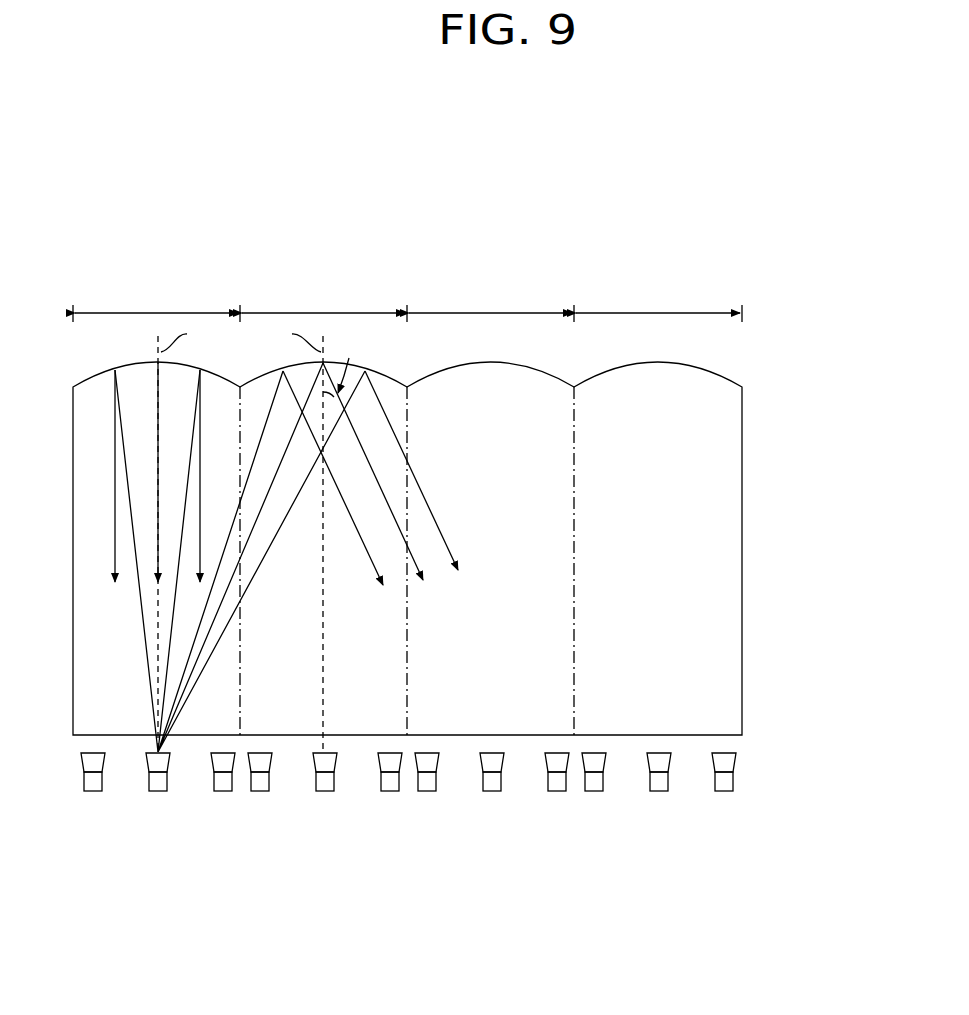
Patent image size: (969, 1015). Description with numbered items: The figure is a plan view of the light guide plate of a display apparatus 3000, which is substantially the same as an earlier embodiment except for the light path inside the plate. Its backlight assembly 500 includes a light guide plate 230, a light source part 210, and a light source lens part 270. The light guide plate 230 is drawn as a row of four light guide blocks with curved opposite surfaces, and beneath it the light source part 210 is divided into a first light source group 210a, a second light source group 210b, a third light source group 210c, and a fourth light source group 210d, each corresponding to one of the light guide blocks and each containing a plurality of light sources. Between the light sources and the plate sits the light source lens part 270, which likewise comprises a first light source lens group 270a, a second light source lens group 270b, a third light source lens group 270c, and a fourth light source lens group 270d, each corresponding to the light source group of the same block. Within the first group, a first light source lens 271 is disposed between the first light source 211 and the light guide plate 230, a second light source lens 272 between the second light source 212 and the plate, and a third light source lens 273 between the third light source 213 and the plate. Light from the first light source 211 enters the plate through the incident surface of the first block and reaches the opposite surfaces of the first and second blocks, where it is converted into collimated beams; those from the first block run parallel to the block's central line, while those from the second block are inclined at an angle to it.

The display apparatus 3000 is at (233, 236).
The backlight assembly 500 is at (820, 705).
The light guide plate 230 is at (743, 718).
The light source lens part 270 is at (740, 754).
The light source part 210 is at (740, 772).
The first light source lens group 270a is at (236, 722).
The second light source lens group 270b is at (403, 722).
The third light source lens group 270c is at (570, 722).
The fourth light source lens group 270d is at (737, 722).
The first light source group 210a is at (236, 851).
The second light source group 210b is at (403, 851).
The third light source group 210c is at (570, 851).
The fourth light source group 210d is at (737, 851).
The first light source 211 is at (158, 790).
The second light source 212 is at (92, 790).
The third light source 213 is at (223, 790).
The first light source lens 271 is at (166, 761).
The second light source lens 272 is at (88, 762).
The third light source lens 273 is at (228, 762).